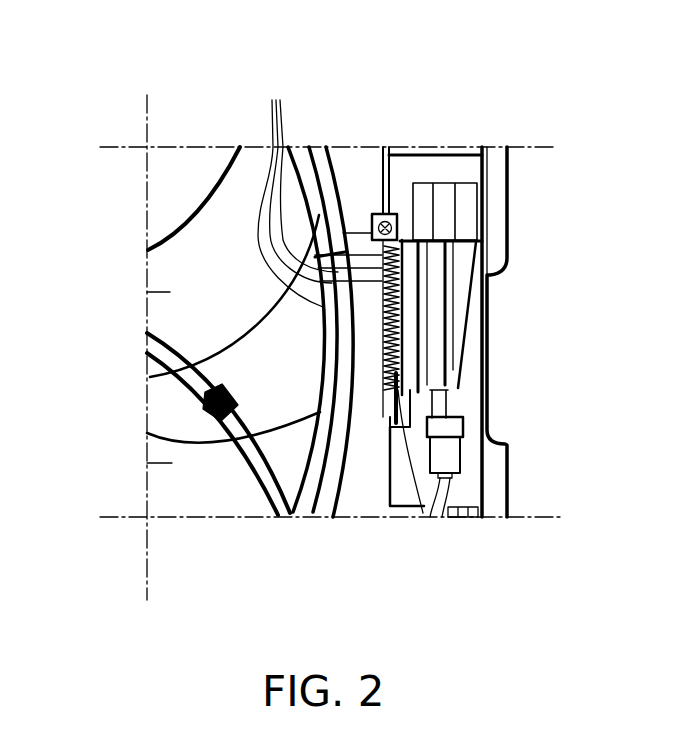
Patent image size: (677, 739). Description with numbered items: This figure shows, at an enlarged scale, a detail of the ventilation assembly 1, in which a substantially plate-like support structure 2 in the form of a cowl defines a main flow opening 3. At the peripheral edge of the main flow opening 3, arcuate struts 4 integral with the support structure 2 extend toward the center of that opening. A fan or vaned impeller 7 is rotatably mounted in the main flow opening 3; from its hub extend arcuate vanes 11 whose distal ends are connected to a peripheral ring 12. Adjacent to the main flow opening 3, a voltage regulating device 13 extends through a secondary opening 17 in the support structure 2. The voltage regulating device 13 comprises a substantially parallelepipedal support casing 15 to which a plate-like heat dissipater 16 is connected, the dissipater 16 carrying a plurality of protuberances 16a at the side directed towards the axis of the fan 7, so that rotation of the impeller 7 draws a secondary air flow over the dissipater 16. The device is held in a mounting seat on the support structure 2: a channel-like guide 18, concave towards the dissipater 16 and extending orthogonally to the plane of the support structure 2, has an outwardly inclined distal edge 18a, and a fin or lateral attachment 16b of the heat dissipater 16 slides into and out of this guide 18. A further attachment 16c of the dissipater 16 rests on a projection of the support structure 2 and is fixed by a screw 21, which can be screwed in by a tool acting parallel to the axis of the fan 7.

The ventilation assembly 1 is at (550, 193).
The support structure 2 is at (511, 468).
The main flow opening 3 is at (328, 425).
The arcuate struts 4 is at (255, 480).
The fan or vaned impeller 7 is at (211, 193).
The arcuate vanes 11 is at (147, 292).
The peripheral ring 12 is at (323, 372).
The voltage regulating device 13 is at (457, 319).
The support casing 15 is at (434, 306).
The heat dissipater 16 is at (403, 213).
The protuberances 16a is at (296, 192).
The fin or lateral attachment 16b is at (390, 362).
The attachment 16c is at (383, 214).
The secondary opening 17 is at (347, 322).
The guide 18 is at (422, 517).
The distal edge 18a is at (448, 393).
The screw 21 is at (380, 212).